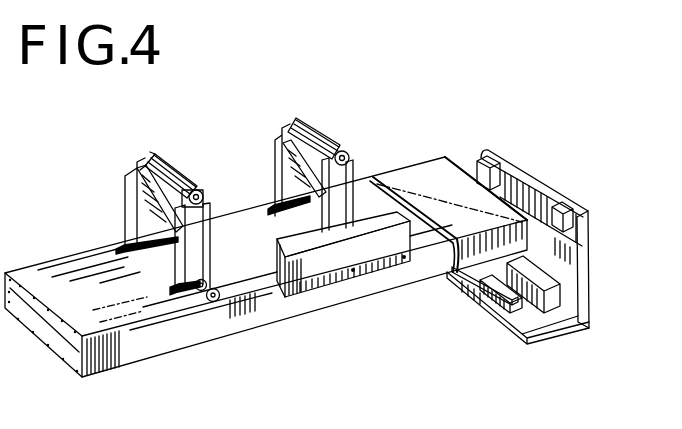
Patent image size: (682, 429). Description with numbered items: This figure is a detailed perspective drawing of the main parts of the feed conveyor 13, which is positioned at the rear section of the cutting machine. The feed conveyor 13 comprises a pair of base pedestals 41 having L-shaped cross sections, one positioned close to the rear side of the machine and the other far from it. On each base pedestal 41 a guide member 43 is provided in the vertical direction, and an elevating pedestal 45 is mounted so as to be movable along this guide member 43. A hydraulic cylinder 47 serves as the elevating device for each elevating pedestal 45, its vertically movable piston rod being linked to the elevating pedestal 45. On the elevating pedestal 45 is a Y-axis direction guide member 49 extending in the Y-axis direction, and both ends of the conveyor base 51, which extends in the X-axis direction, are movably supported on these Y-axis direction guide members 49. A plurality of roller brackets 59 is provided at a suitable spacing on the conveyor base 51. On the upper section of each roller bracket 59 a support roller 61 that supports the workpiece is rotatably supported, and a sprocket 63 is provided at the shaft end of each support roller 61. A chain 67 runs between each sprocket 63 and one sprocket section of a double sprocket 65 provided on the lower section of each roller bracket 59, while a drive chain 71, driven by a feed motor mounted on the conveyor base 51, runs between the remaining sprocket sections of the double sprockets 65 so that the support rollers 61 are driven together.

The feed conveyor 13 is at (462, 143).
The base pedestal 41 is at (590, 300).
The guide member 43 is at (584, 221).
The elevating pedestal 45 is at (557, 313).
The hydraulic cylinder 47 is at (503, 302).
The Y-axis direction guide member 49 is at (524, 332).
The conveyor base 51 is at (337, 302).
The roller bracket 59 is at (125, 186).
The support roller 61 is at (168, 157).
The sprocket 63 is at (201, 193).
The double sprocket 65 is at (216, 303).
The chain 67 is at (215, 221).
The drive chain 71 is at (143, 322).